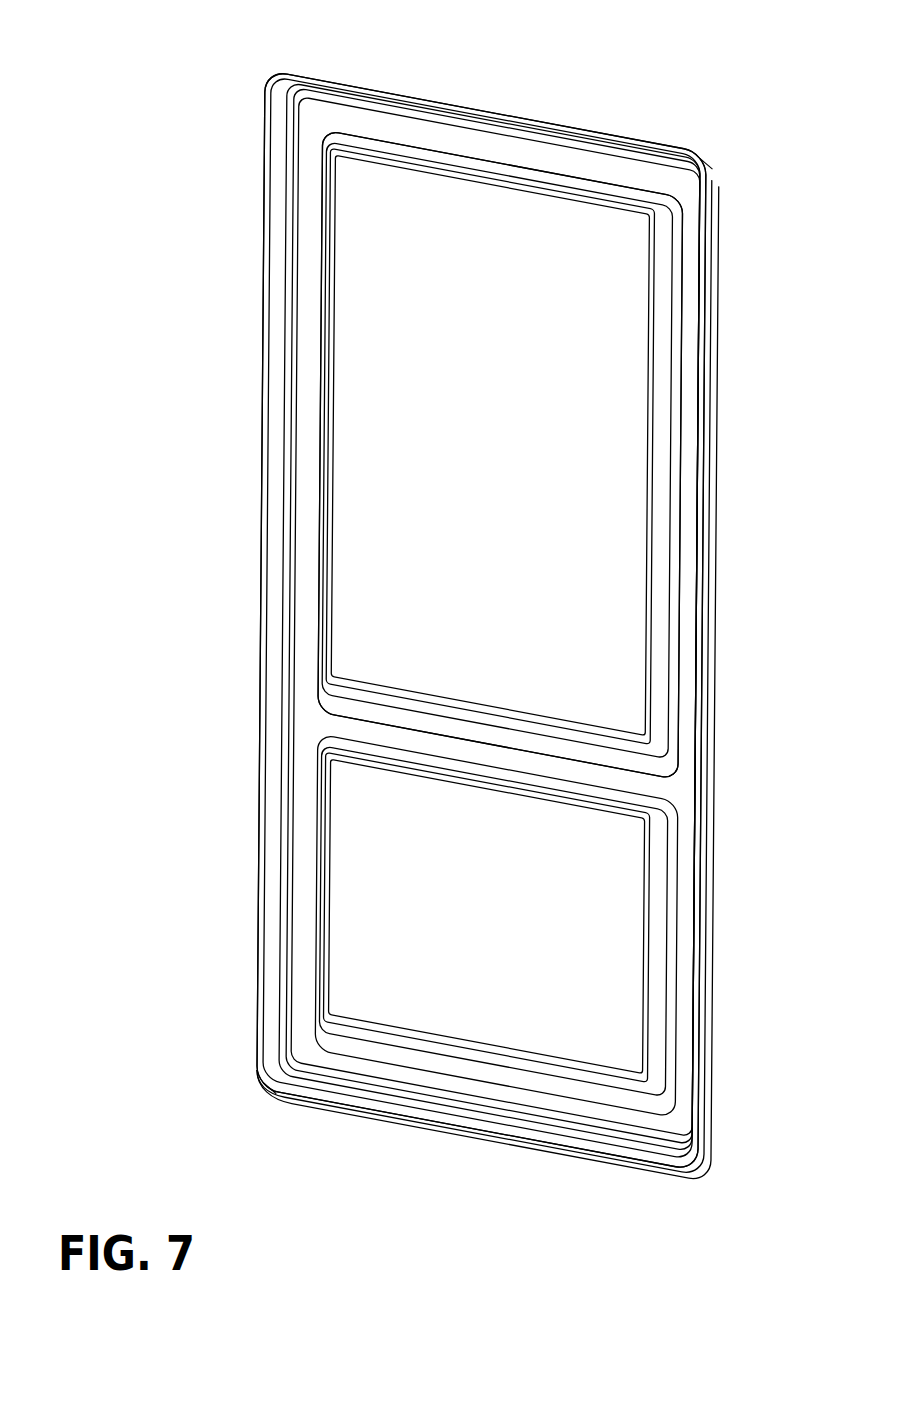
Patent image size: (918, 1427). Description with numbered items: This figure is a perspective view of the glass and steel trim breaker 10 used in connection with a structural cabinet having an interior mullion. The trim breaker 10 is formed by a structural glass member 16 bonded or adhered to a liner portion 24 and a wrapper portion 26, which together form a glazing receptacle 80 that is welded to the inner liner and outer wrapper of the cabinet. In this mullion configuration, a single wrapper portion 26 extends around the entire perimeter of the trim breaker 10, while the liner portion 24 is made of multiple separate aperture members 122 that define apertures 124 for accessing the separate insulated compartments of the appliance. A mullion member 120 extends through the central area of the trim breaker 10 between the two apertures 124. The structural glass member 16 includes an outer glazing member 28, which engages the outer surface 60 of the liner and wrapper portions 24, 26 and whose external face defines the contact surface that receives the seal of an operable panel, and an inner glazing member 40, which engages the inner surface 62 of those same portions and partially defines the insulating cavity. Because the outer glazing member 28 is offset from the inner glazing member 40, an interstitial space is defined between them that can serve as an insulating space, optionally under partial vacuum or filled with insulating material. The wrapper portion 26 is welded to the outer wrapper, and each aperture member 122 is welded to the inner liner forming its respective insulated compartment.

The trim breaker 10 is at (548, 84).
The structural glass member 16 is at (295, 405).
The liner portion 24 is at (350, 260).
The wrapper portion 26 is at (622, 128).
The outer glazing member 28 is at (320, 527).
The inner glazing member 40 is at (300, 698).
The outer surface 60 is at (717, 160).
The inner surface 62 is at (313, 1097).
The glazing receptacle 80 is at (250, 152).
The mullion member 120 is at (398, 690).
The aperture members 122 is at (355, 490).
The apertures 124 is at (345, 400).